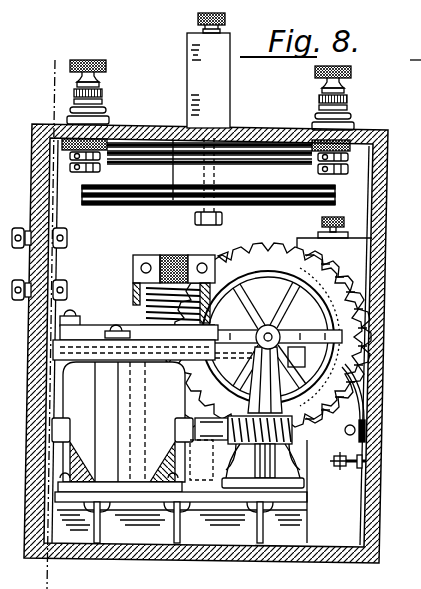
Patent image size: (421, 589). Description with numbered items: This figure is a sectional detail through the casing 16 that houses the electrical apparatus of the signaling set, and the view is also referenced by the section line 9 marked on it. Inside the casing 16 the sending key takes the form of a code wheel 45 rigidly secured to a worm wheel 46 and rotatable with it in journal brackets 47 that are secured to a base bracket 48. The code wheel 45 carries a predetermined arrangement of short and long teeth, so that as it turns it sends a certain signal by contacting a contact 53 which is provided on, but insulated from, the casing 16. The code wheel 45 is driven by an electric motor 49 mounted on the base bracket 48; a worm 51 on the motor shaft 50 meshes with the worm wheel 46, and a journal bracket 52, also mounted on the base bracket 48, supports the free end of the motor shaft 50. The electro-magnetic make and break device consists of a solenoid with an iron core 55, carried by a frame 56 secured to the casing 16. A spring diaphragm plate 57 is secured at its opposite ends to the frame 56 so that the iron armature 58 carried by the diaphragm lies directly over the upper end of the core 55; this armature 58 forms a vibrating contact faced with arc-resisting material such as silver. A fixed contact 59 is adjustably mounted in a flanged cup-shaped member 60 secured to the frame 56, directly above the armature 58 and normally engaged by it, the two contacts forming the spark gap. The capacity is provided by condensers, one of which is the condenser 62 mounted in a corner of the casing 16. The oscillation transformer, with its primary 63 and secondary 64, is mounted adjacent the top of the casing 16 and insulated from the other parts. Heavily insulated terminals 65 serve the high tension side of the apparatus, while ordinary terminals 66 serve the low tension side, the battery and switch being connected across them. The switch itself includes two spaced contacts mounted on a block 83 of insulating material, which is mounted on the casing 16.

The section line 9 is at (53, 316).
The casing 16 is at (372, 447).
The code wheel 45 is at (277, 244).
The worm wheel 46 is at (268, 327).
The journal brackets 47 is at (263, 373).
The base bracket 48 is at (197, 500).
The electric motor 49 is at (122, 427).
The motor shaft 50 is at (196, 425).
The worm 51 is at (247, 452).
The journal bracket 52 is at (303, 484).
The contact 53 is at (346, 403).
The iron core 55 is at (140, 325).
The frame 56 is at (100, 360).
The spring diaphragm plate 57 is at (80, 309).
The iron armature 58 is at (212, 329).
The fixed contact 59 is at (147, 284).
The flanged cup-shaped member 60 is at (200, 258).
The condenser 62 is at (334, 243).
The primary 63 is at (148, 206).
The secondary 64 is at (124, 152).
The heavily insulated terminals 65 is at (107, 65).
The ordinary terminals 66 is at (61, 280).
The block of insulating material 83 is at (208, 119).